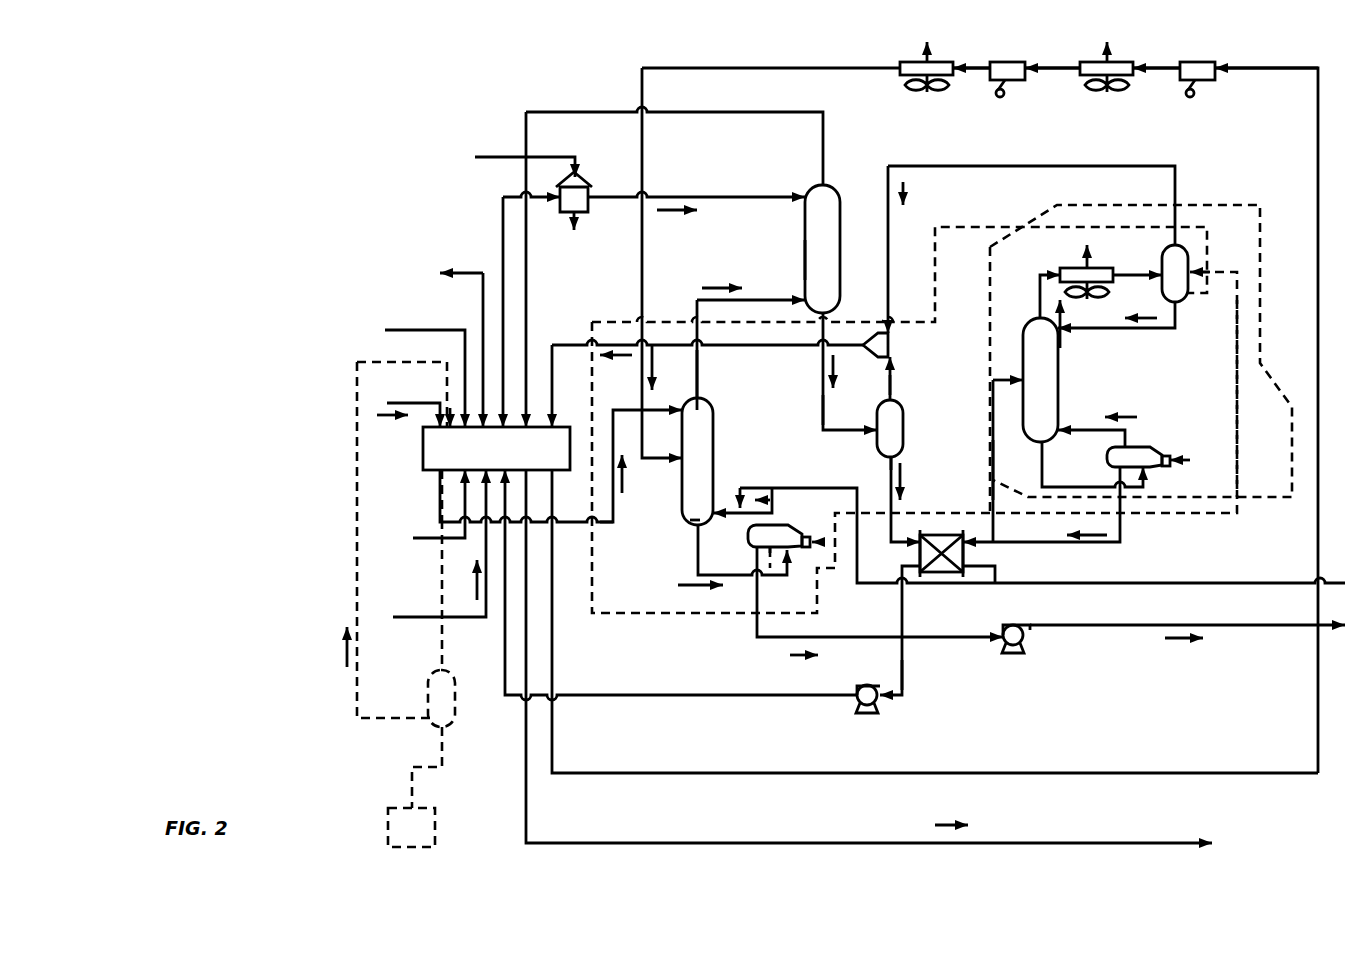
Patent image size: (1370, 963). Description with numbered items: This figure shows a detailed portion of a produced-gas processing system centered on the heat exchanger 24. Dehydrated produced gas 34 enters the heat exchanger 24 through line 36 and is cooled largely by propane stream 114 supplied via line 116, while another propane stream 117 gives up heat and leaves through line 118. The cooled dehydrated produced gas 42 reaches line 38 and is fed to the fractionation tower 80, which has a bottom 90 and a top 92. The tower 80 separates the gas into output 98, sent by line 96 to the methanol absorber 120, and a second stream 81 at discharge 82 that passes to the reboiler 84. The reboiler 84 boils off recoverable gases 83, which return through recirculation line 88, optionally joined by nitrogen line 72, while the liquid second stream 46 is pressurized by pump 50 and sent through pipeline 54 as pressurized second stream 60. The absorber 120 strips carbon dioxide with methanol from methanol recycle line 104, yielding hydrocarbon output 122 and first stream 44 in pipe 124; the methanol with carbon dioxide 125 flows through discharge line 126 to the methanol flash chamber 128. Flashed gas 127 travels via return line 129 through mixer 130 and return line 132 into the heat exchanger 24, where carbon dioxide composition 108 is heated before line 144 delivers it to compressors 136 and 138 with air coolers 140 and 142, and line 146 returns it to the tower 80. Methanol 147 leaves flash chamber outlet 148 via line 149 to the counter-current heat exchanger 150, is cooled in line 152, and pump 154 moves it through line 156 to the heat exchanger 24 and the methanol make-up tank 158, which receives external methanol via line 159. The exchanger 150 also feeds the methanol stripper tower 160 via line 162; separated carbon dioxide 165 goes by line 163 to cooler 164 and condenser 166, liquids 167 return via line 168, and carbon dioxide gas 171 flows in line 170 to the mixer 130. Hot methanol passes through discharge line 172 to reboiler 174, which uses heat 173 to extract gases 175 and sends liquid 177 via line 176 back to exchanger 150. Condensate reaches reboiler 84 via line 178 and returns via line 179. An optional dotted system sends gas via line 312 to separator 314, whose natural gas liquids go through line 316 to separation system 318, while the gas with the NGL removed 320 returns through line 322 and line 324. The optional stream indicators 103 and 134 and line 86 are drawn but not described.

The heat exchanger 24 is at (423, 450).
The dehydrated produced gas 34 is at (390, 418).
The line 36 is at (420, 403).
The line 38 is at (616, 522).
The cooled dehydrated produced gas 42 is at (624, 488).
The first stream 44 is at (942, 825).
The second stream 46 is at (800, 657).
The pump 50 is at (1023, 625).
The pipeline 54 is at (1190, 625).
The pressurized second stream 60 is at (1190, 640).
The nitrogen line 72 is at (786, 488).
The fractionation tower 80 is at (697, 461).
The second stream 81 is at (680, 587).
The discharge 82 is at (698, 552).
The recoverable gases 83 is at (752, 497).
The reboiler 84 is at (786, 530).
The bottoms line 86 is at (836, 637).
The recirculation line 88 is at (738, 528).
The bottom 90 is at (677, 522).
The top 92 is at (716, 406).
The line 96 is at (697, 378).
The output 98 is at (715, 285).
The liquid stream 103 is at (675, 212).
The methanol recycle line 104 is at (690, 197).
The carbon dioxide composition 108 is at (648, 370).
The propane stream 114 is at (477, 580).
The line 116 is at (422, 617).
The propane stream 117 is at (432, 535).
The line 118 is at (422, 330).
The methanol absorber 120 is at (805, 265).
The hydrocarbon output 122 is at (838, 182).
The pipe 124 is at (688, 112).
The methanol with carbon dioxide 125 is at (835, 375).
The discharge line 126 is at (821, 410).
The gas 127 is at (938, 385).
The methanol flash chamber 128 is at (905, 430).
The return line 129 is at (895, 372).
The mixer 130 is at (895, 348).
The return line 132 is at (745, 345).
The stream to heat exchanger 134 is at (605, 362).
The compressor 136 is at (1200, 62).
The compressor 138 is at (1005, 62).
The air cooler 140 is at (1120, 62).
The air cooler 142 is at (940, 62).
The line 144 is at (790, 773).
The line 146 is at (685, 68).
The methanol 147 is at (903, 472).
The flash chamber outlet 148 is at (900, 460).
The line 149 is at (888, 490).
The counter-current heat exchanger 150 is at (942, 535).
The line 152 is at (904, 668).
The pump 154 is at (862, 685).
The line 156 is at (632, 695).
The methanol make-up tank 158 is at (586, 182).
The line 159 is at (505, 157).
The methanol stripper tower 160 is at (1058, 385).
The line 162 is at (993, 455).
The line 163 is at (1040, 298).
The cooler 164 is at (1065, 268).
The separated carbon dioxide 165 is at (1060, 317).
The condenser 166 is at (1190, 262).
The liquids 167 is at (1150, 318).
The line 168 is at (1132, 328).
The line 170 is at (1018, 166).
The carbon dioxide gas 171 is at (905, 185).
The discharge line 172 is at (1042, 458).
The heat 173 is at (1178, 460).
The reboiler 174 is at (1150, 447).
The gases 175 is at (1120, 417).
The line 176 is at (1085, 540).
The liquid 177 is at (1110, 522).
The line 178 is at (965, 227).
The line 179 is at (1240, 425).
The line 312 is at (445, 645).
The separator 314 is at (462, 735).
The line 316 is at (425, 780).
The separation system 318 is at (440, 827).
The dehydrated produced gas with the NGL removed 320 is at (345, 650).
The line 322 is at (357, 565).
The line 324 is at (447, 492).